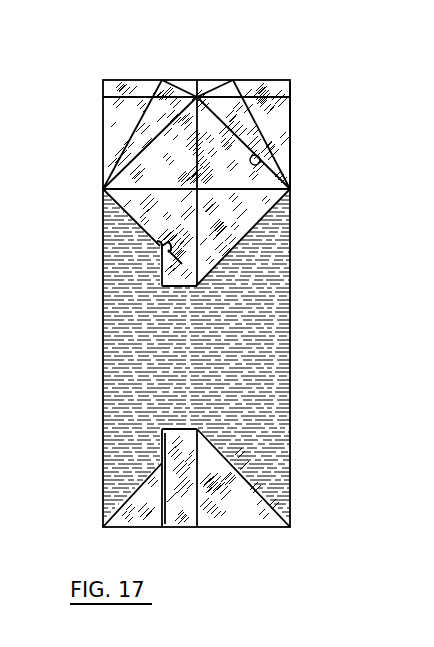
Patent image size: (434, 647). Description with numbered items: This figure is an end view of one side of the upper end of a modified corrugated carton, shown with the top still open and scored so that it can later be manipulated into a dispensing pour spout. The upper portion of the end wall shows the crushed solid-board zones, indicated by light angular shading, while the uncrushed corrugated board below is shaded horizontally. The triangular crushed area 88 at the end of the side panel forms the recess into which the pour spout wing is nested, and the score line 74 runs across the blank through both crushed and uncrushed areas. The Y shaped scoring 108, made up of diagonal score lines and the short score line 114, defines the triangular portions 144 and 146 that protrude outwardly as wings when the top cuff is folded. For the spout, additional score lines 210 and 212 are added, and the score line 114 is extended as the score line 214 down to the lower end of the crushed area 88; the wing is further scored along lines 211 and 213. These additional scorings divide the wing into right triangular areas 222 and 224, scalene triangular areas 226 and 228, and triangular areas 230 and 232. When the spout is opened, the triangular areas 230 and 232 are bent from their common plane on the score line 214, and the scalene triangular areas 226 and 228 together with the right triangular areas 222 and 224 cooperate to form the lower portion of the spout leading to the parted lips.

The score line 74 is at (246, 192).
The triangular crushed area 88 is at (242, 212).
The Y shaped scoring 108 is at (197, 96).
The short score line 114 is at (188, 80).
The triangular portion 144 is at (272, 128).
The triangular portion 146 is at (130, 100).
The additional score line 210 is at (292, 141).
The score line 211 is at (158, 246).
The additional score line 212 is at (126, 151).
The score line 213 is at (258, 250).
The extended score line 214 is at (193, 213).
The right triangular area 222 is at (265, 150).
The right triangular area 224 is at (115, 116).
The scalene triangular area 226 is at (236, 91).
The scalene triangular area 228 is at (178, 96).
The triangular area 230 is at (237, 240).
The triangular area 232 is at (156, 231).